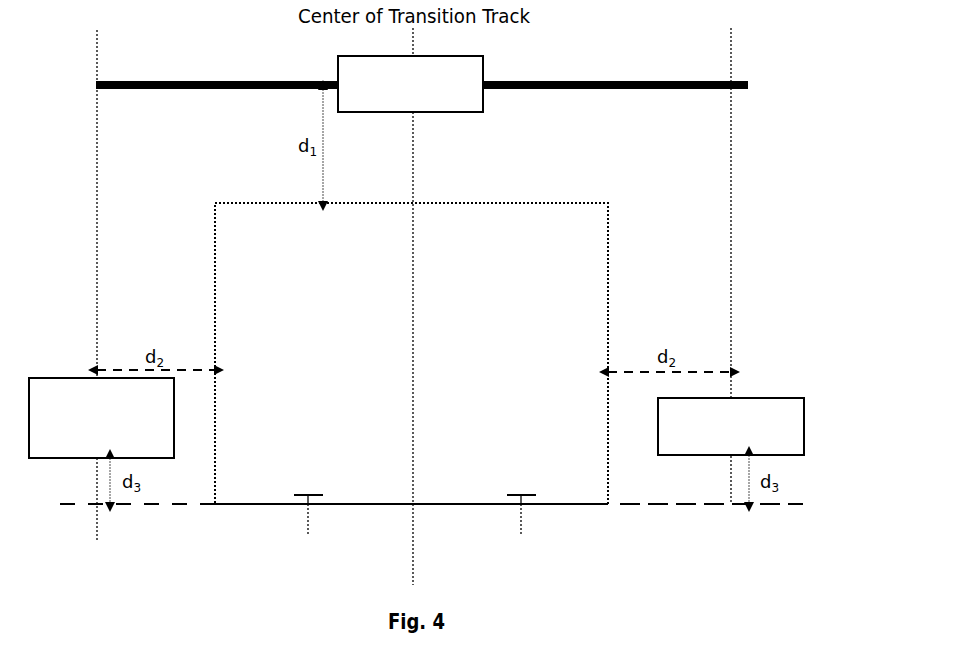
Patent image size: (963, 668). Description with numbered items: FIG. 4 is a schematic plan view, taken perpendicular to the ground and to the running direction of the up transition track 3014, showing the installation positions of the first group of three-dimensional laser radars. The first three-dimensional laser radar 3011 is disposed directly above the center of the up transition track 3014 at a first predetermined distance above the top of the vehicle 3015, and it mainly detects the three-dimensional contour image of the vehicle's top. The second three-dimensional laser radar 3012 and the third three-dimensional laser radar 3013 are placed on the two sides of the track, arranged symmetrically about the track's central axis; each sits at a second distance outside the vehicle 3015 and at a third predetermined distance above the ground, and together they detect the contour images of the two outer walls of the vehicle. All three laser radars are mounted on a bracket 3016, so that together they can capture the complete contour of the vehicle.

The first three-dimensional laser radar 3011 is at (410, 84).
The second three-dimensional laser radar 3012 is at (101, 418).
The third three-dimensional laser radar 3013 is at (731, 426).
The up transition track 3014 is at (308, 535).
The vehicle 3015 is at (467, 203).
The bracket 3016 is at (510, 84).